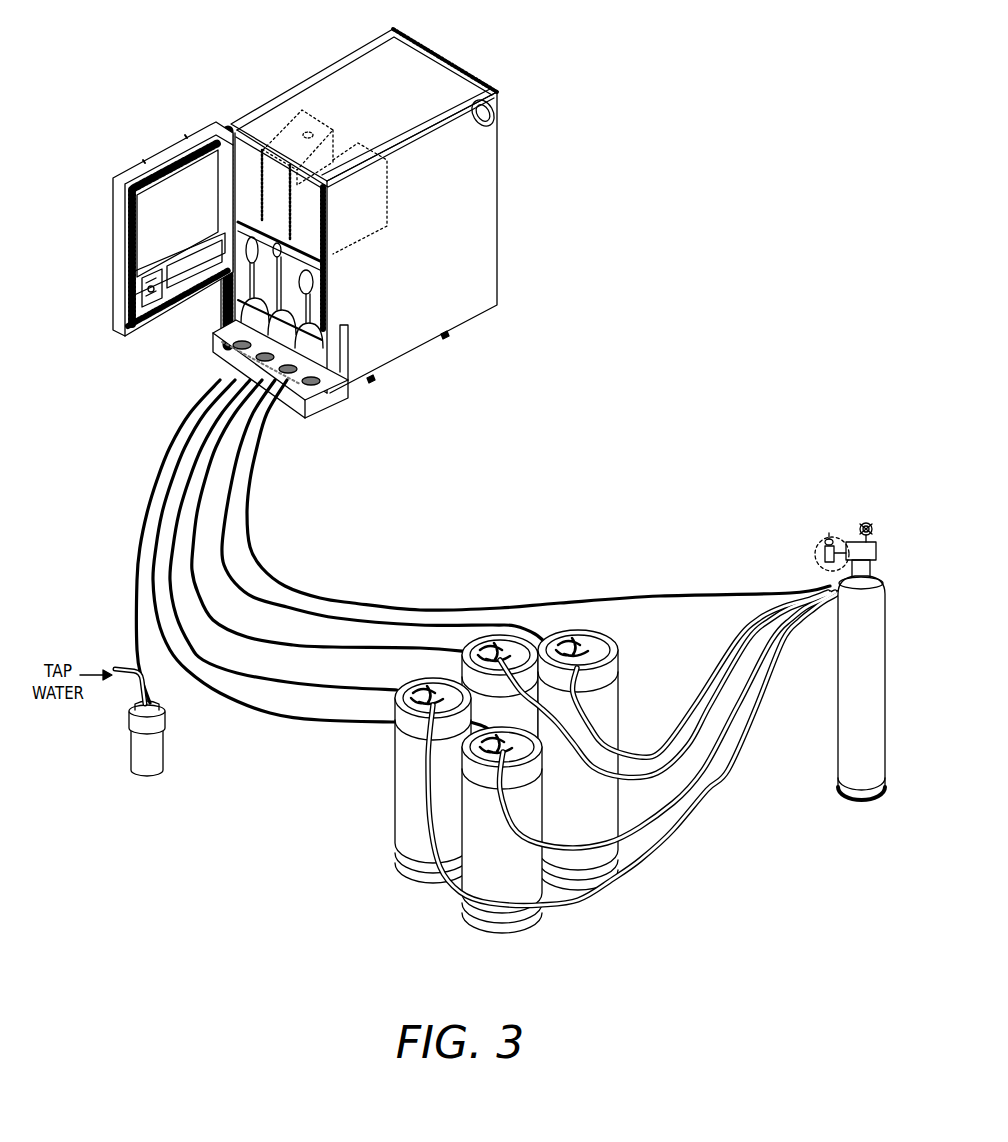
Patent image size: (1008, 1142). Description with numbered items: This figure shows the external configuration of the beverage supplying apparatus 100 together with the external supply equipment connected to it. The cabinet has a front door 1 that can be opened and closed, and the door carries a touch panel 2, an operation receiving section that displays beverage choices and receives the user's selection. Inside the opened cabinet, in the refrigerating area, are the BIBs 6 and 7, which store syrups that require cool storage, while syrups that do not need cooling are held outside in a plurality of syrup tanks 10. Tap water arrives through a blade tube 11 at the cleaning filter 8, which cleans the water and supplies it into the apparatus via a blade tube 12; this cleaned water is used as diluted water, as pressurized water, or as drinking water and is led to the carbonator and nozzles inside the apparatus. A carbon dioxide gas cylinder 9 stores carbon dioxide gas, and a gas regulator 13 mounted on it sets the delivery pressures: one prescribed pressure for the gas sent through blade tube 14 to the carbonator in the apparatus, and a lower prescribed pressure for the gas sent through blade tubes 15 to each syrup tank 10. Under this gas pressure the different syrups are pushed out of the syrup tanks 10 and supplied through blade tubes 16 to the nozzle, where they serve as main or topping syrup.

The beverage supplying apparatus 100 is at (324, 210).
The front door 1 is at (173, 219).
The touch panel 2 is at (176, 214).
The BIB 6 is at (285, 133).
The BIB 7 is at (372, 190).
The cleaning filter 8 is at (147, 773).
The carbon dioxide gas cylinder 9 is at (838, 660).
The syrup tank 10 is at (468, 673).
The blade tube 11 is at (126, 670).
The blade tube 12 is at (324, 582).
The gas regulator 13 is at (825, 538).
The blade tube 14 is at (662, 597).
The blade tube 15 is at (733, 766).
The blade tube 16 is at (368, 622).